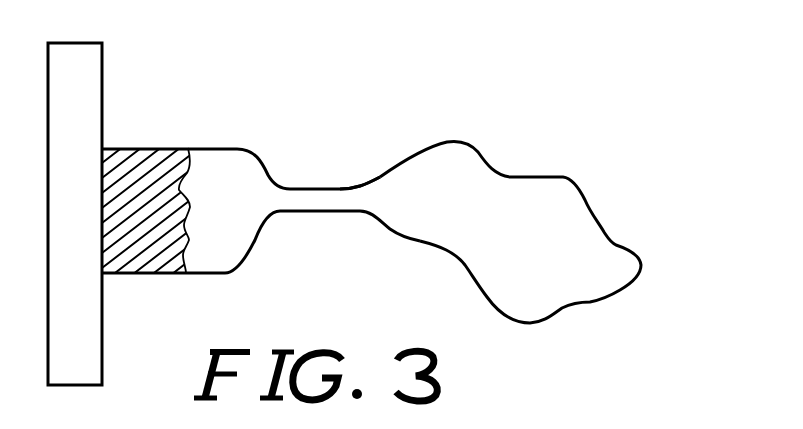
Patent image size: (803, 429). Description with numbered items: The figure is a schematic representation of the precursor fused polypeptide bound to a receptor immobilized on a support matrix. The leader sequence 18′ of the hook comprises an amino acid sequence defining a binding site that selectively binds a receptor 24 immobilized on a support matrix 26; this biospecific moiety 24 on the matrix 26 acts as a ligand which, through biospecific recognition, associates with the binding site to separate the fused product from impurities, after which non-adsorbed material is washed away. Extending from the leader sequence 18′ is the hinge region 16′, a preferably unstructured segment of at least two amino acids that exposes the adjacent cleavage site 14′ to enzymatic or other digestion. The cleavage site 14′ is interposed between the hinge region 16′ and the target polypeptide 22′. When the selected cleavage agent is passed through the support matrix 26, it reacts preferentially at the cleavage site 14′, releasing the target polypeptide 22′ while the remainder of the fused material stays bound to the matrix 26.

The support matrix 26 is at (88, 214).
The receptor 24 is at (135, 149).
The leader sequence 18′ is at (237, 179).
The hinge region 16′ is at (305, 198).
The cleavage site 14′ is at (344, 191).
The target polypeptide 22′ is at (524, 241).